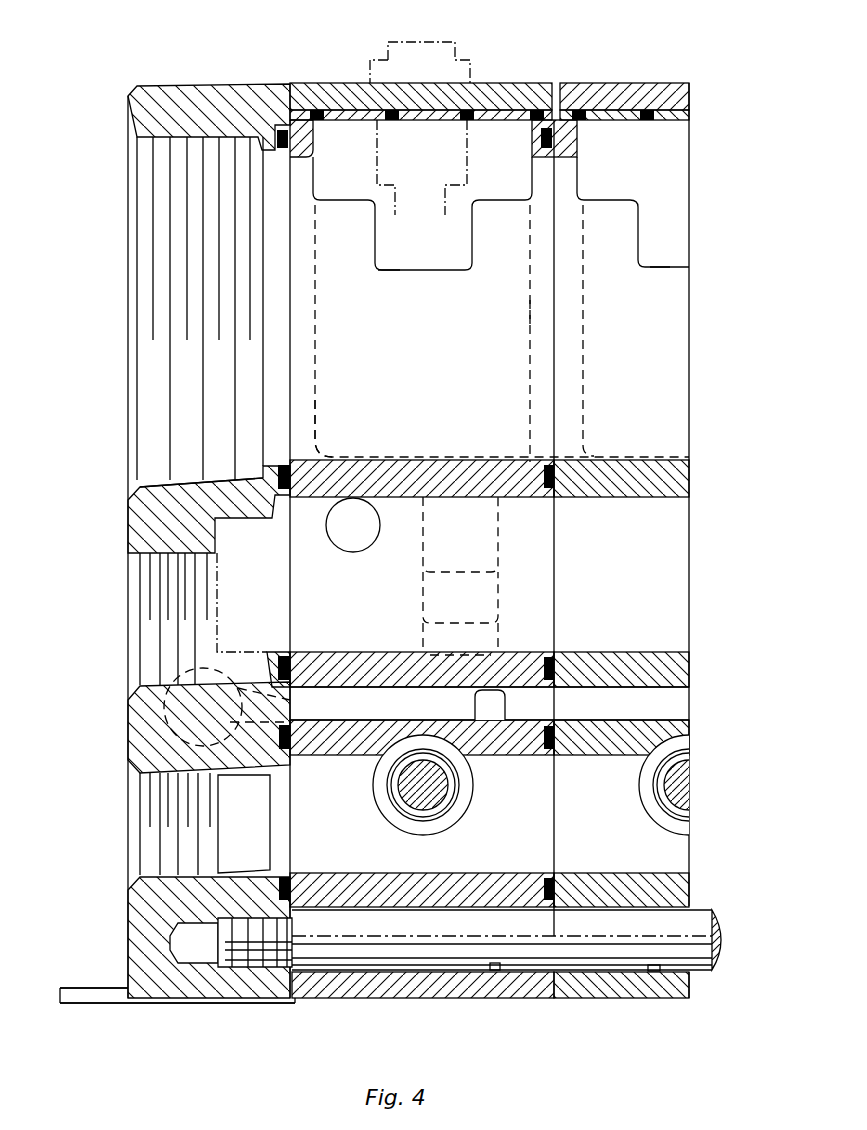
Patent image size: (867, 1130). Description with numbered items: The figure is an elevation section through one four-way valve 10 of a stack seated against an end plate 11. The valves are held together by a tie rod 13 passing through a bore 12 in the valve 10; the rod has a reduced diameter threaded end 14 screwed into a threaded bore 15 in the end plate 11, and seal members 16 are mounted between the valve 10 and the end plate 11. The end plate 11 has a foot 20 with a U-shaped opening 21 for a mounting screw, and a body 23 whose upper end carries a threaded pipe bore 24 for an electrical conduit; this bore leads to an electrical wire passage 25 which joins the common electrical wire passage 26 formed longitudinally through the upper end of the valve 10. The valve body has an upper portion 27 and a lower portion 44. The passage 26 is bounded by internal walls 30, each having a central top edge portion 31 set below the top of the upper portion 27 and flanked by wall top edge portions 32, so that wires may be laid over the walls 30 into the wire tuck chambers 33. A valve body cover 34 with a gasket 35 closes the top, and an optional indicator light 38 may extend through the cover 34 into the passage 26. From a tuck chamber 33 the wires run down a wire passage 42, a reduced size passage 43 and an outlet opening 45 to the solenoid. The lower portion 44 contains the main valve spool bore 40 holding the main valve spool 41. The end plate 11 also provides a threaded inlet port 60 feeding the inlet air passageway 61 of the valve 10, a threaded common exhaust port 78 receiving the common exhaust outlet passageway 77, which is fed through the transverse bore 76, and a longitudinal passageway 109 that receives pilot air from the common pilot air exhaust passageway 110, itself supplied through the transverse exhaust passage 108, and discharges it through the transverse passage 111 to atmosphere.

The four-way valve 10 is at (409, 1006).
The end plate 11 is at (212, 998).
The bore 12 is at (497, 968).
The tie rod 13 is at (695, 925).
The reduced diameter threaded end 14 is at (275, 967).
The threaded bore 15 is at (250, 963).
The seal member 16 is at (275, 140).
The feet 20 is at (77, 990).
The U-shaped opening 21 is at (740, 771).
The body 23 is at (147, 522).
The threaded pipe bore 24 is at (170, 482).
The electrical wire passage 25 is at (276, 466).
The common electrical wire passage 26 is at (455, 352).
The valve body upper portion 27 is at (438, 470).
The internal integral wall 30 is at (473, 290).
The central top edge portion 31 is at (412, 270).
The wall top edge portion 32 is at (350, 189).
The electrical wire tuck chamber 33 is at (528, 308).
The valve body cover 34 is at (500, 96).
The gasket 35 is at (323, 112).
The indicator light 38 is at (462, 44).
The main valve spool bore 40 is at (430, 808).
The main valve spool 41 is at (396, 797).
The wire passage 42 is at (505, 530).
The reduced size passage 43 is at (505, 598).
The valve body lower portion 44 is at (650, 735).
The outlet opening 45 is at (505, 630).
The threaded inlet port 60 is at (157, 778).
The inlet air passageway 61 is at (350, 875).
The transverse bore 76 is at (372, 540).
The common exhaust outlet passageway 77 is at (372, 656).
The threaded common exhaust port 78 is at (157, 563).
The transverse exhaust passage 108 is at (478, 706).
The longitudinal passageway 109 is at (282, 705).
The common pilot air exhaust passageway 110 is at (322, 722).
The transverse passage 111 is at (165, 719).